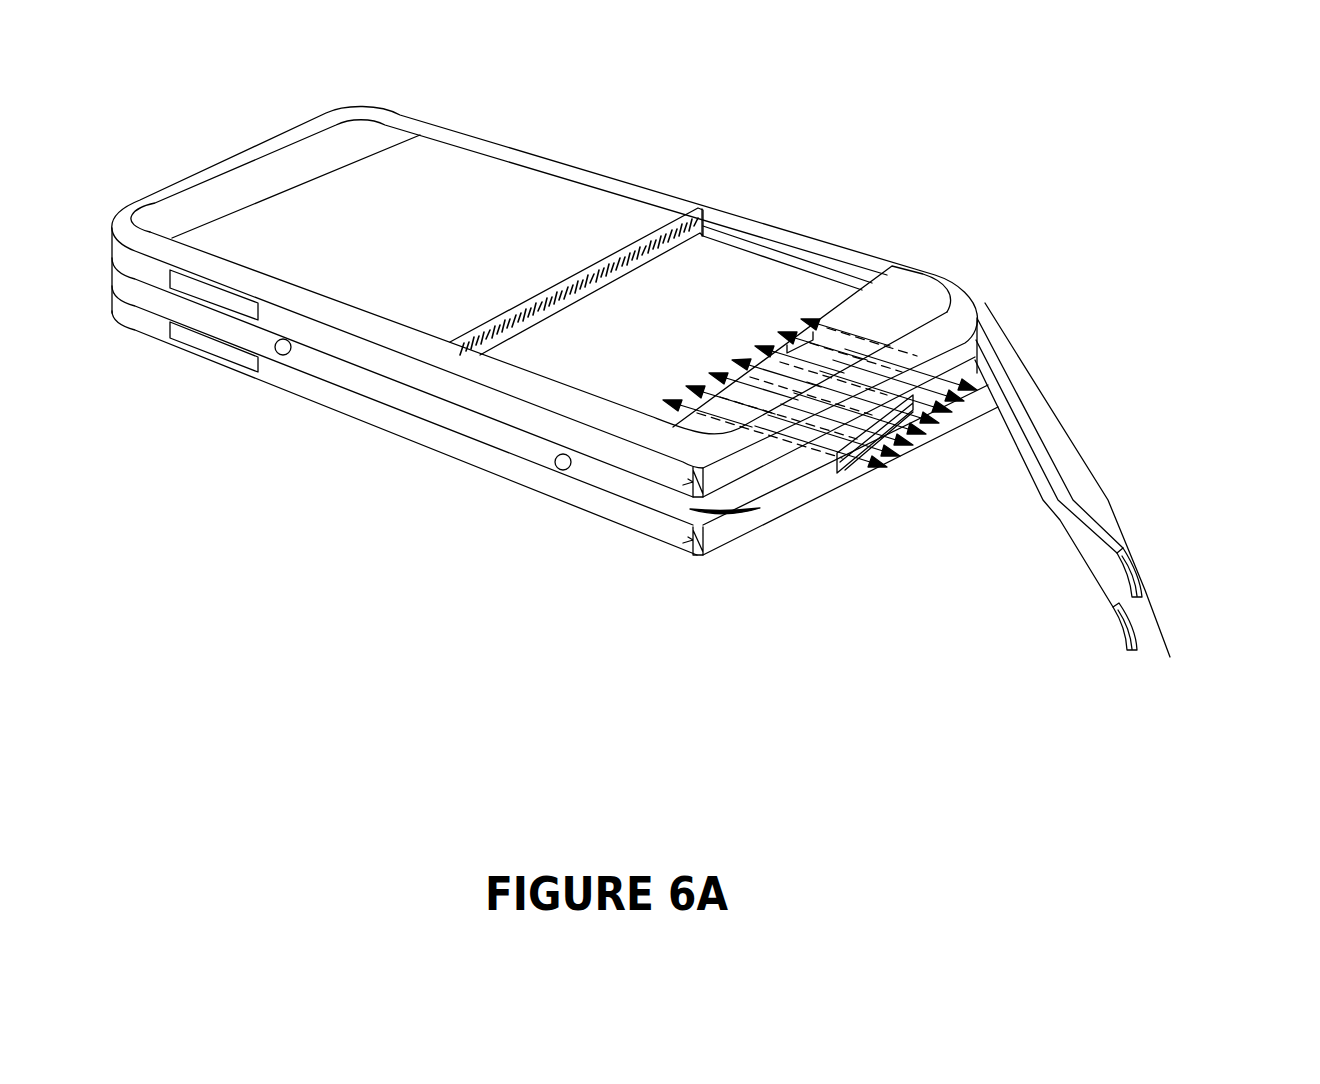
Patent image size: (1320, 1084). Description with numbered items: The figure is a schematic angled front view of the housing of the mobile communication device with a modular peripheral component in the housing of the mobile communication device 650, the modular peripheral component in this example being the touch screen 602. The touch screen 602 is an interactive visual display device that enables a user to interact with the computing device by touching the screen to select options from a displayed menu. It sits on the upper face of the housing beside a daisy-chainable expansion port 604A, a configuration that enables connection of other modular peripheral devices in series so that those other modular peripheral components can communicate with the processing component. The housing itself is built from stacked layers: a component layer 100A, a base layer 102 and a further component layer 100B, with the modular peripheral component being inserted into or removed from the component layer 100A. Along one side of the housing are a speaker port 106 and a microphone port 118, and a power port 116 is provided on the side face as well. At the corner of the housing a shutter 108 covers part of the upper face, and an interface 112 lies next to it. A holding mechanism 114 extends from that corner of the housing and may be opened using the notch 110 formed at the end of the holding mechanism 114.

The touch screen 602 is at (543, 170).
The daisy-chainable expansion port 604A is at (698, 217).
The shutter 108 is at (903, 278).
The speaker port 106 is at (193, 335).
The microphone port 118 is at (281, 357).
The component layer 100A is at (487, 398).
The power port 116 is at (559, 471).
The base layer 102 is at (665, 508).
The component layer 100B is at (683, 545).
The interface 112 is at (840, 463).
The holding mechanism 114 is at (1057, 505).
The notch 110 is at (1130, 623).
The front view of the housing of the mobile communication device with a modular peri 650 is at (758, 735).